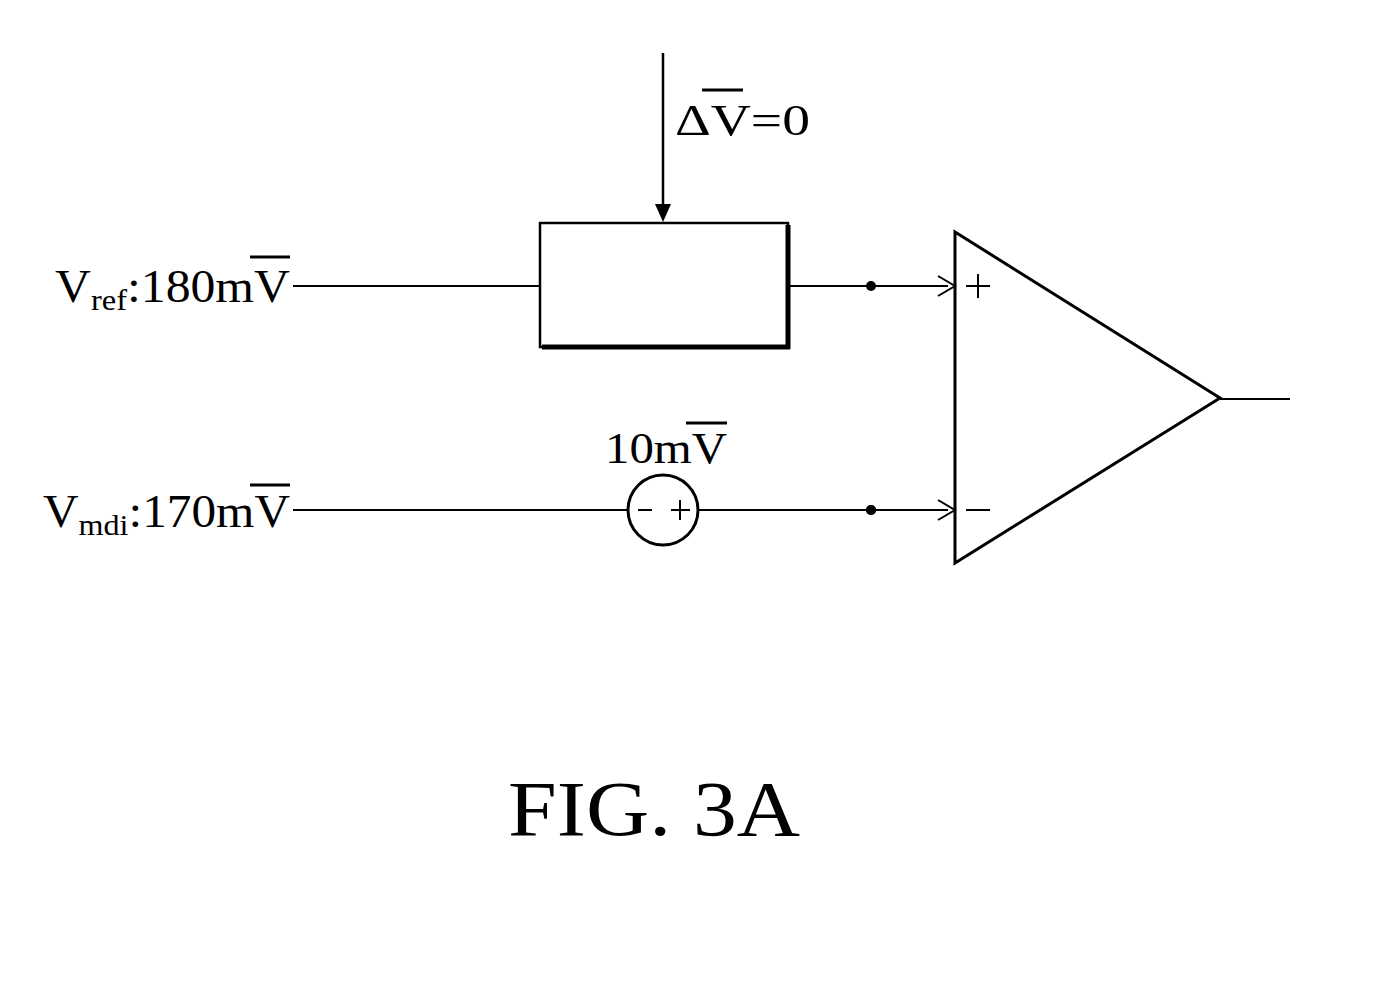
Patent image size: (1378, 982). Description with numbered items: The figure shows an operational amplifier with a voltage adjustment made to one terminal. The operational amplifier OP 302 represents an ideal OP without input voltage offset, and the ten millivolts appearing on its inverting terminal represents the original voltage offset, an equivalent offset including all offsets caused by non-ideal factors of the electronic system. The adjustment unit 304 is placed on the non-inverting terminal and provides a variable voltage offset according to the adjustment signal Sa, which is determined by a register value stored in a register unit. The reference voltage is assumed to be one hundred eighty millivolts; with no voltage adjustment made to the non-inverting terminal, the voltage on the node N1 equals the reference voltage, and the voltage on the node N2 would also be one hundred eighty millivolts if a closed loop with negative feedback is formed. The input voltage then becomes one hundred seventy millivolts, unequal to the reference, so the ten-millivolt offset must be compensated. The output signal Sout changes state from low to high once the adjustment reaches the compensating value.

The operational amplifier 302 is at (1085, 310).
The adjustment unit 304 is at (723, 223).
The node N1 is at (876, 312).
The node N2 is at (876, 535).
The adjustment signal Sa is at (663, 113).
The output signal Sout is at (1290, 401).